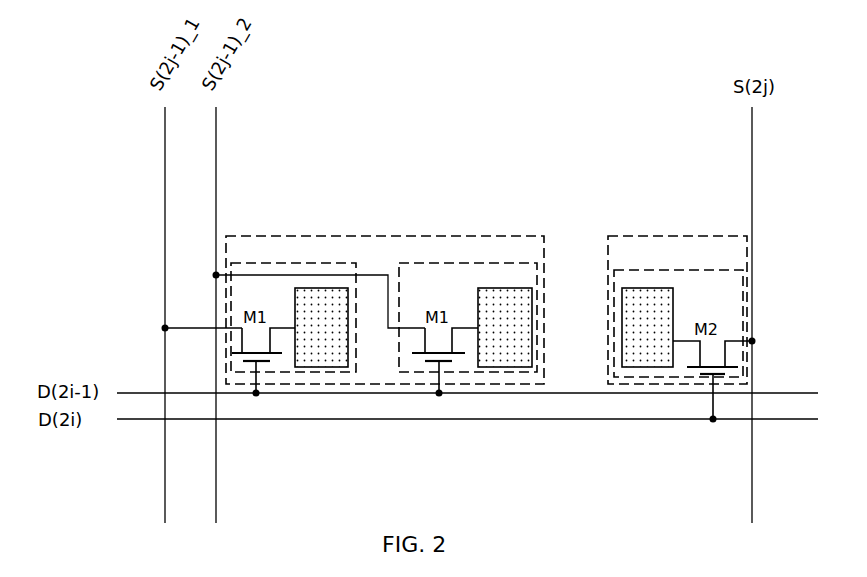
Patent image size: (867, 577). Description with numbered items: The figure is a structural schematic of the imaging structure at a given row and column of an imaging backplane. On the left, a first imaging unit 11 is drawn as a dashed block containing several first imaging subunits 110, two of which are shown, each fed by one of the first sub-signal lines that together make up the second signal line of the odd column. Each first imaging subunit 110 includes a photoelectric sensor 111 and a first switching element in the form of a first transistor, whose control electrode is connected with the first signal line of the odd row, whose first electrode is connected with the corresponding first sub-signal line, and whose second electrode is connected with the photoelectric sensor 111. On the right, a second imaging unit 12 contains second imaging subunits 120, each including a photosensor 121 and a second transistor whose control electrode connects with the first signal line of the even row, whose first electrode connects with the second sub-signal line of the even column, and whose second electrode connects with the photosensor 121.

The first imaging unit 11 is at (347, 236).
The first imaging subunit 110 is at (288, 263).
The photoelectric sensor 111 is at (327, 367).
The second imaging unit 12 is at (683, 236).
The second imaging subunit 120 is at (638, 270).
The photosensor 121 is at (645, 367).